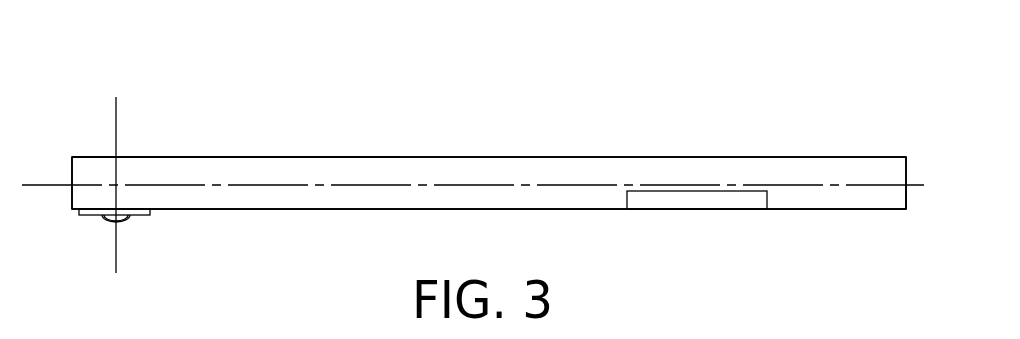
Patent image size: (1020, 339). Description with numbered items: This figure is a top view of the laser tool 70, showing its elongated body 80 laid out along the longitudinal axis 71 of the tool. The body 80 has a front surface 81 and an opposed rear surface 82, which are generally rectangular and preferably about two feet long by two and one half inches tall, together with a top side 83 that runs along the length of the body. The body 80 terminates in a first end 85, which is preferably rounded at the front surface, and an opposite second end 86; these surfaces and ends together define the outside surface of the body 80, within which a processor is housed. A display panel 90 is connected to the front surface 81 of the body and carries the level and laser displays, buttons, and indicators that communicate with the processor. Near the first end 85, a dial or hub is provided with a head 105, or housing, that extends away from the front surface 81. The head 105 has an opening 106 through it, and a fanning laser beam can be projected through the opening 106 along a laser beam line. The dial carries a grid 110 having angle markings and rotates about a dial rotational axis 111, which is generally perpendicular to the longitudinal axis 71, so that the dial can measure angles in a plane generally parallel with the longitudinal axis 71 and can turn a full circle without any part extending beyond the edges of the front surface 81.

The laser tool 70 is at (505, 118).
The longitudinal axis 71 is at (909, 189).
The body 80 is at (360, 157).
The front surface 81 is at (268, 209).
The rear surface 82 is at (263, 157).
The top side 83 is at (192, 168).
The first end 85 is at (72, 168).
The second end 86 is at (906, 168).
The display panel 90 is at (687, 209).
The head 105 is at (128, 219).
The opening 106 is at (107, 219).
The grid 110 is at (80, 215).
The dial rotational axis 111 is at (115, 262).